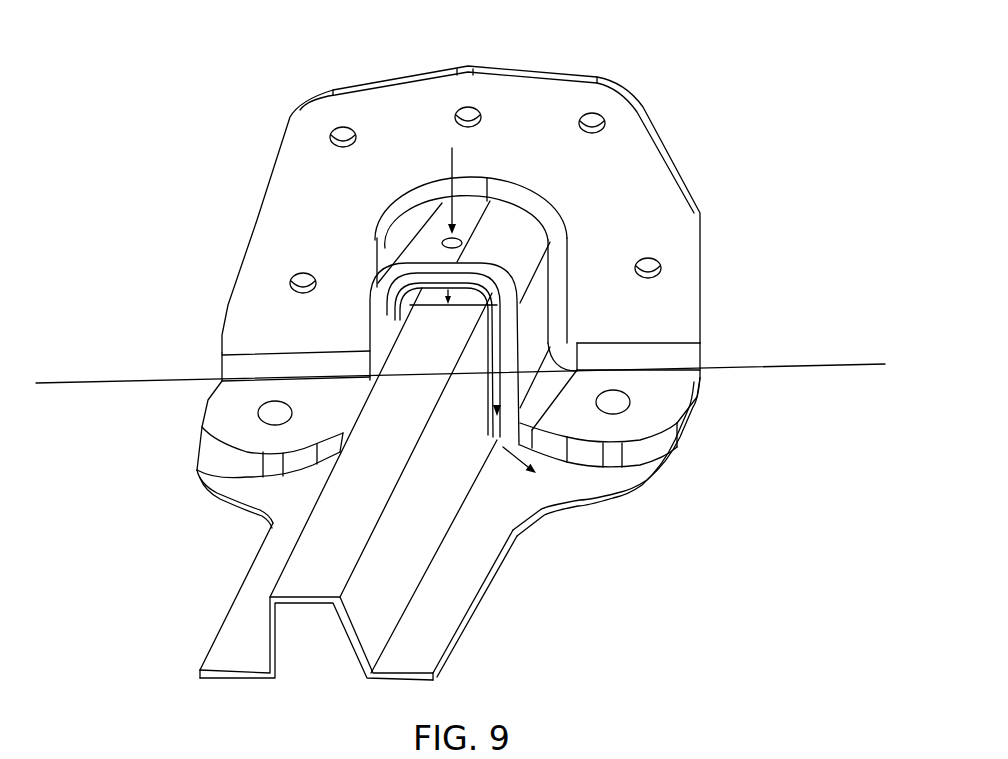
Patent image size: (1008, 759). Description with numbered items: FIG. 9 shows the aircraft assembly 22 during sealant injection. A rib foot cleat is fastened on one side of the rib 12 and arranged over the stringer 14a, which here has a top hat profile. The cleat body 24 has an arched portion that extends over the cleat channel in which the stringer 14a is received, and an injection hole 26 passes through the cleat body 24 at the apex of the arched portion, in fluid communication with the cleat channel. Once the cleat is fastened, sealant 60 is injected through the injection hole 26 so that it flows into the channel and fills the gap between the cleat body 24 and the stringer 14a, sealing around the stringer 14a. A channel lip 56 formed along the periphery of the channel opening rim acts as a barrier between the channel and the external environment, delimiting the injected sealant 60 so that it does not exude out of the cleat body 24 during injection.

The rib 12 is at (172, 365).
The stringer 14a is at (457, 597).
The aircraft assembly 22 is at (263, 94).
The cleat body 24 is at (533, 297).
The injection hole 26 is at (437, 243).
The channel lip 56 is at (400, 313).
The sealant 60 is at (455, 158).